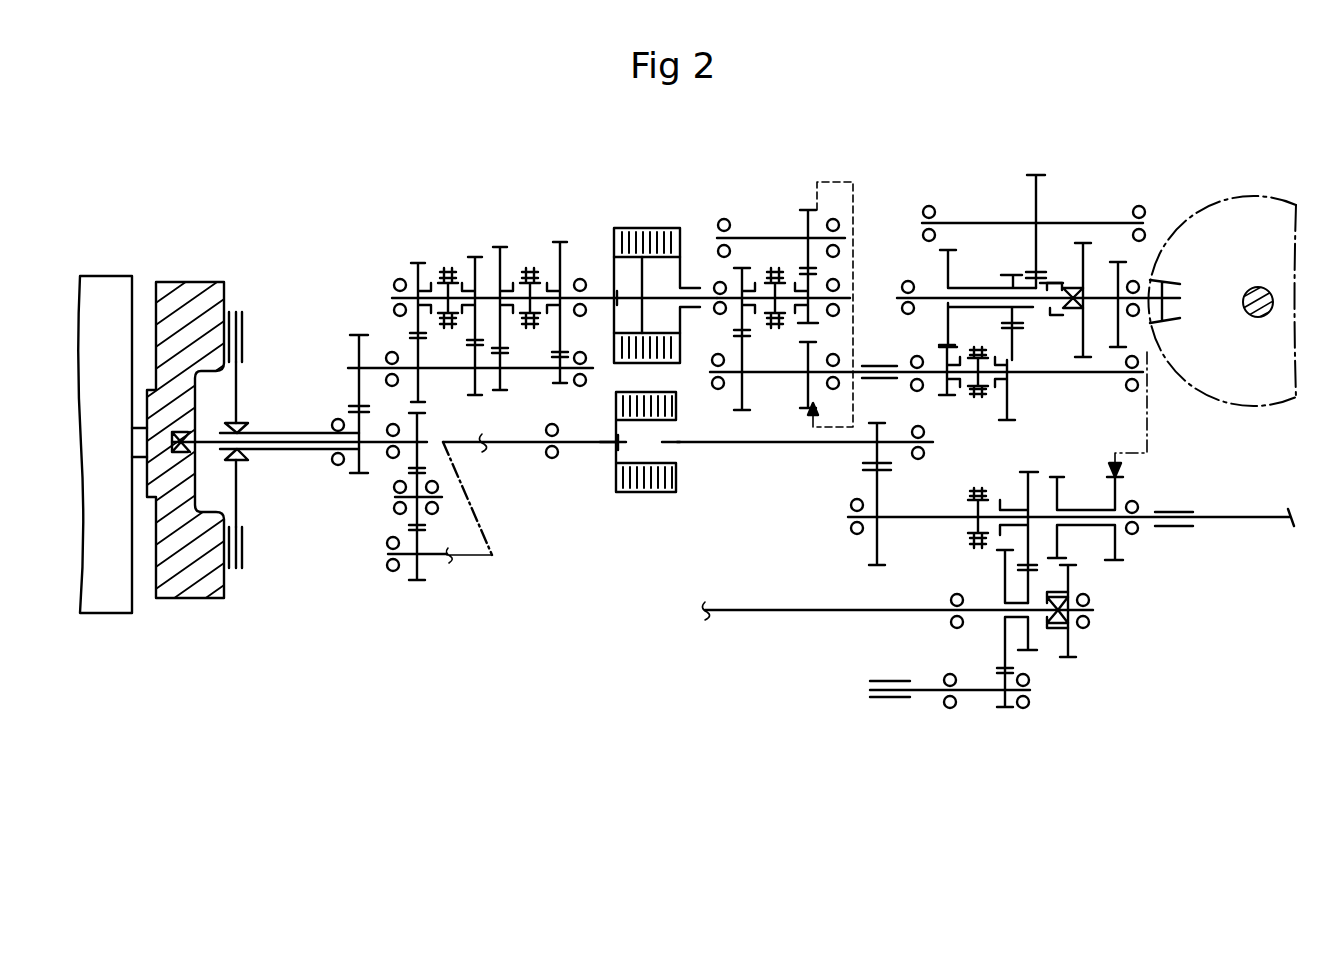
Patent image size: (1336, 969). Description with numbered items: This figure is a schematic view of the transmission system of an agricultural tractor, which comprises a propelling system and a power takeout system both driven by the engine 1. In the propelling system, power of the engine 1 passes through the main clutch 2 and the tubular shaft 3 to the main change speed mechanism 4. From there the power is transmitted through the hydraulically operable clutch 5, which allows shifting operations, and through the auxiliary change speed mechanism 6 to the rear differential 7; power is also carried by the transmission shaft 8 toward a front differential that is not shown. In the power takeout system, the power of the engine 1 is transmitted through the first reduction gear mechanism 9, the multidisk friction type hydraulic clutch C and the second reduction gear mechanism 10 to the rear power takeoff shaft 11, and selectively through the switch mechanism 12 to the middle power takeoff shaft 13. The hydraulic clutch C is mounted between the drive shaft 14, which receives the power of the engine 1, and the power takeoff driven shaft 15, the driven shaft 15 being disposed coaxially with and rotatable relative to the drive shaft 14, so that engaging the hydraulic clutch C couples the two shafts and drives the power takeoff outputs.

The engine 1 is at (110, 277).
The main clutch 2 is at (258, 326).
The tubular shaft 3 is at (288, 451).
The main change speed mechanism 4 is at (489, 222).
The hydraulically operable clutch 5 is at (652, 228).
The auxiliary change speed mechanism 6 is at (768, 224).
The rear differential 7 is at (1254, 194).
The transmission shaft 8 is at (773, 608).
The first reduction gear mechanism 9 is at (388, 517).
The second reduction gear mechanism 10 is at (858, 473).
The rear power takeoff shaft 11 is at (1220, 518).
The switch mechanism 12 is at (1001, 478).
The middle power takeoff shaft 13 is at (930, 688).
The drive shaft 14 is at (580, 446).
The power takeoff driven shaft 15 is at (727, 446).
The hydraulic clutch C is at (645, 493).